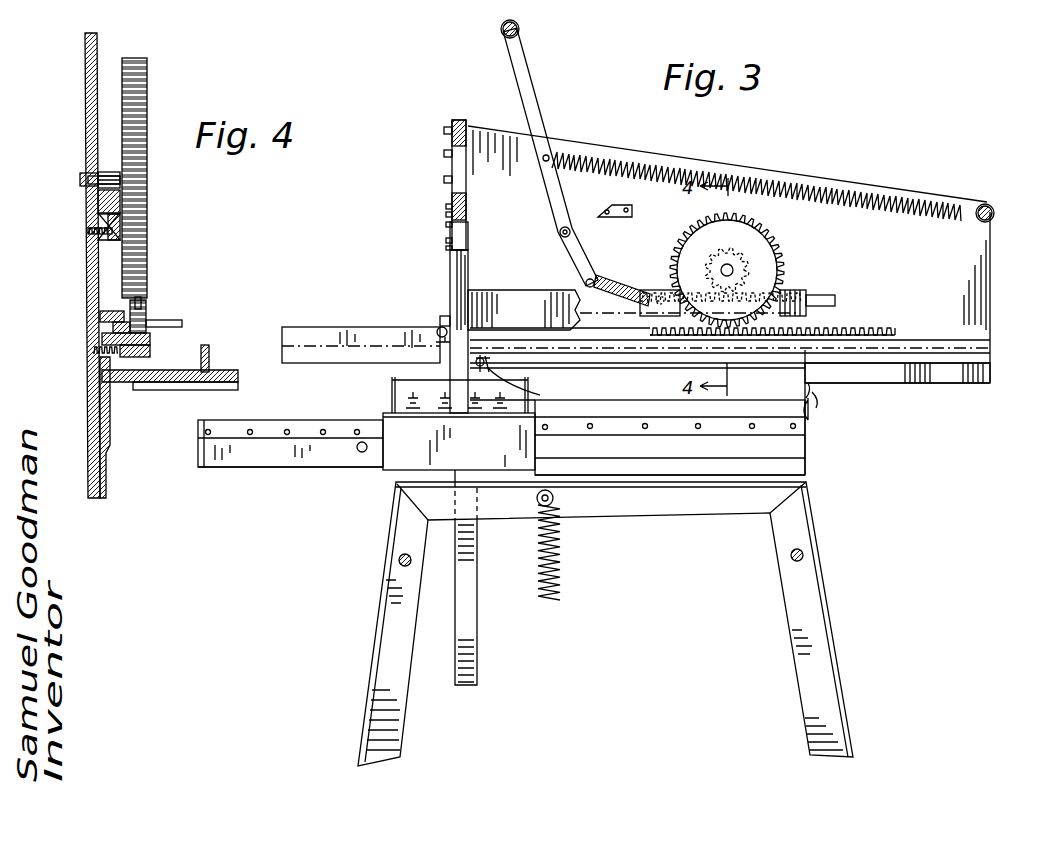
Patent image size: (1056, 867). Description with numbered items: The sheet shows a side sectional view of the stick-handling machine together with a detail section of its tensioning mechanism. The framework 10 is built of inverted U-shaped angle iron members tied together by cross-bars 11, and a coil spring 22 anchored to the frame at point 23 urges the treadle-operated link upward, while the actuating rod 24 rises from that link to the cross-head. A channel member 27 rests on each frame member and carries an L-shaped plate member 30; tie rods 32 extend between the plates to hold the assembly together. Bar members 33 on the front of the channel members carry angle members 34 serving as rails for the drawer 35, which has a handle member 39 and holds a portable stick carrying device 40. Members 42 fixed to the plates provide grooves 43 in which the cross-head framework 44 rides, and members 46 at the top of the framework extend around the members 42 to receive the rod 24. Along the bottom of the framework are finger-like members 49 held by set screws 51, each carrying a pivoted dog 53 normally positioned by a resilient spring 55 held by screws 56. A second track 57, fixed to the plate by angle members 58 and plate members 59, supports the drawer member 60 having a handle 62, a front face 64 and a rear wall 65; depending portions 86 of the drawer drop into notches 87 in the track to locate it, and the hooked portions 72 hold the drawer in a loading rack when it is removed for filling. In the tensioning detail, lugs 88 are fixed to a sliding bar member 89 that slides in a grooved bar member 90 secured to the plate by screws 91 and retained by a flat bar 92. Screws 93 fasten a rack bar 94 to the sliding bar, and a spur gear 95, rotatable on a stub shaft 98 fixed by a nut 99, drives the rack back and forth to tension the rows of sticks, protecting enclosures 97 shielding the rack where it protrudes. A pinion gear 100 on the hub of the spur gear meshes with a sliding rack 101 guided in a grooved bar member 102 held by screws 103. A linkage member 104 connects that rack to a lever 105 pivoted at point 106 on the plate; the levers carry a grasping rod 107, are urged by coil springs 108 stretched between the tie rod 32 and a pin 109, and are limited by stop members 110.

In FIG. 3, the framework 10 is at (358, 595).
In FIG. 3, the cross-bars 11 is at (830, 545).
In FIG. 3, the coil spring 22 is at (562, 568).
In FIG. 3, the spring attachment point 23 is at (553, 498).
In FIG. 3, the actuating rod 24 is at (478, 592).
In FIG. 3, the channel member 27 is at (808, 456).
In FIG. 4, the L-shaped plate member 30 is at (85, 100).
In FIG. 3, the L-shaped plate member 30 is at (845, 252).
In FIG. 3, the tie rod 32 is at (996, 213).
In FIG. 3, the bar member 33 is at (808, 441).
In FIG. 3, the angle member rail 34 is at (202, 432).
In FIG. 3, the drawer 35 is at (398, 468).
In FIG. 3, the handle member 39 is at (357, 450).
In FIG. 3, the stick carrying and holding device 40 is at (386, 397).
In FIG. 3, the track member 42 is at (449, 282).
In FIG. 3, the track groove 43 is at (450, 266).
In FIG. 3, the cross-head framework 44 is at (452, 185).
In FIG. 3, the side member 46 is at (446, 140).
In FIG. 3, the finger-like member 49 is at (450, 226).
In FIG. 3, the set screw 51 is at (448, 205).
In FIG. 3, the dog 53 is at (466, 245).
In FIG. 3, the resilient spring 55 is at (450, 216).
In FIG. 3, the screws 56 is at (450, 248).
In FIG. 4, the second track 57 is at (209, 352).
In FIG. 3, the second track 57 is at (805, 390).
In FIG. 4, the angle member 58 is at (100, 430).
In FIG. 3, the angle member 58 is at (812, 420).
In FIG. 4, the plate member 59 is at (185, 390).
In FIG. 3, the plate member 59 is at (632, 373).
In FIG. 3, the drawer member 60 is at (514, 312).
In FIG. 3, the handle 62 is at (440, 327).
In FIG. 3, the front face 64 is at (465, 300).
In FIG. 3, the rear wall 65 is at (828, 324).
In FIG. 3, the hooked portion 72 is at (820, 402).
In FIG. 3, the depending portion 86 is at (497, 372).
In FIG. 3, the notch 87 is at (486, 364).
In FIG. 4, the lug 88 is at (148, 318).
In FIG. 3, the lug 88 is at (825, 350).
In FIG. 4, the sliding bar member 89 is at (182, 323).
In FIG. 4, the grooved bar member 90 is at (102, 340).
In FIG. 3, the grooved bar member 90 is at (935, 372).
In FIG. 4, the screws 91 is at (93, 350).
In FIG. 4, the flat bar 92 is at (100, 312).
In FIG. 3, the flat bar 92 is at (925, 337).
In FIG. 4, the screws 93 is at (152, 352).
In FIG. 4, the rack bar 94 is at (141, 300).
In FIG. 3, the rack bar 94 is at (885, 368).
In FIG. 4, the spur gear 95 is at (147, 245).
In FIG. 3, the spur gear 95 is at (778, 225).
In FIG. 3, the protecting enclosure 97 is at (305, 348).
In FIG. 4, the stub shaft 98 is at (93, 172).
In FIG. 3, the stub shaft 98 is at (733, 268).
In FIG. 4, the nut 99 is at (80, 181).
In FIG. 4, the pinion gear 100 is at (110, 172).
In FIG. 3, the pinion gear 100 is at (738, 240).
In FIG. 4, the sliding rack 101 is at (98, 200).
In FIG. 3, the sliding rack 101 is at (835, 300).
In FIG. 4, the grooved bar member 102 is at (98, 222).
In FIG. 3, the grooved bar member 102 is at (795, 295).
In FIG. 4, the screws 103 is at (92, 233).
In FIG. 3, the linkage member 104 is at (628, 292).
In FIG. 3, the lever 105 is at (532, 102).
In FIG. 3, the pivot point 106 is at (560, 233).
In FIG. 3, the rod member 107 is at (519, 30).
In FIG. 3, the coil spring 108 is at (720, 185).
In FIG. 3, the pin 109 is at (550, 155).
In FIG. 3, the stop member 110 is at (626, 205).